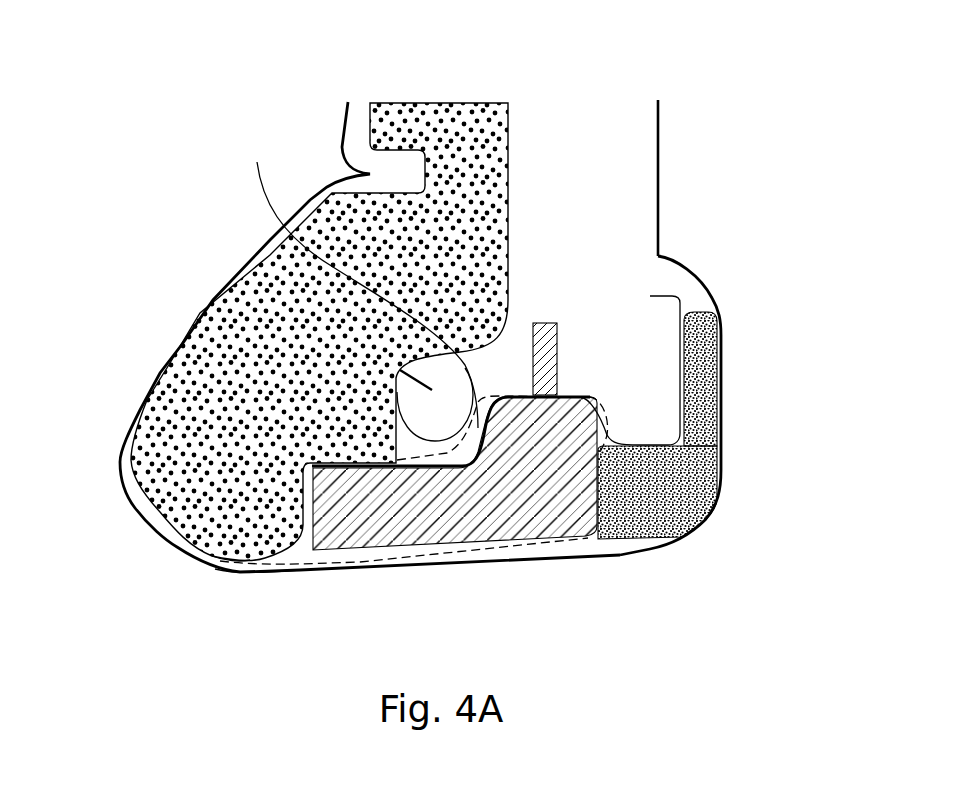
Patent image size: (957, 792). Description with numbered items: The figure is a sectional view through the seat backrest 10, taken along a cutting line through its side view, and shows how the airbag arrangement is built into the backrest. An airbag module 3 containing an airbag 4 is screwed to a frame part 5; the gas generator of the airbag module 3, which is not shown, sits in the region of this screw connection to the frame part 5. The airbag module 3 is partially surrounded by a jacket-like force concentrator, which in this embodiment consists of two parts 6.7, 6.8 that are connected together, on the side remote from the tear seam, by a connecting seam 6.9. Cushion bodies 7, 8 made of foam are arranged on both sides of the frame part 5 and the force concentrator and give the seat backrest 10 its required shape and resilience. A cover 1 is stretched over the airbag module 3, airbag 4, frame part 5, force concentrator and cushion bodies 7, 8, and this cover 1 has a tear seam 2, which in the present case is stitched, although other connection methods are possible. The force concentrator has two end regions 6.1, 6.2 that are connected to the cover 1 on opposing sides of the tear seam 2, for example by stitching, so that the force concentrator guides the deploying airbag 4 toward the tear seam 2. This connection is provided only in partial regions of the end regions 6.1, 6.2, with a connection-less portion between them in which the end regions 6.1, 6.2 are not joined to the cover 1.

The seat backrest 10 is at (592, 88).
The cover 1 is at (695, 272).
The tear seam 2 is at (423, 374).
The airbag module 3 is at (440, 434).
The airbag 4 is at (600, 487).
The frame part 5 is at (580, 397).
The end region 6.1 is at (230, 543).
The end region 6.2 is at (253, 583).
The part of force concentrator 6.7 is at (359, 283).
The part of force concentrator 6.8 is at (423, 550).
The connecting seam 6.9 is at (633, 415).
The cushion body 7 is at (273, 400).
The cushion body 8 is at (707, 428).